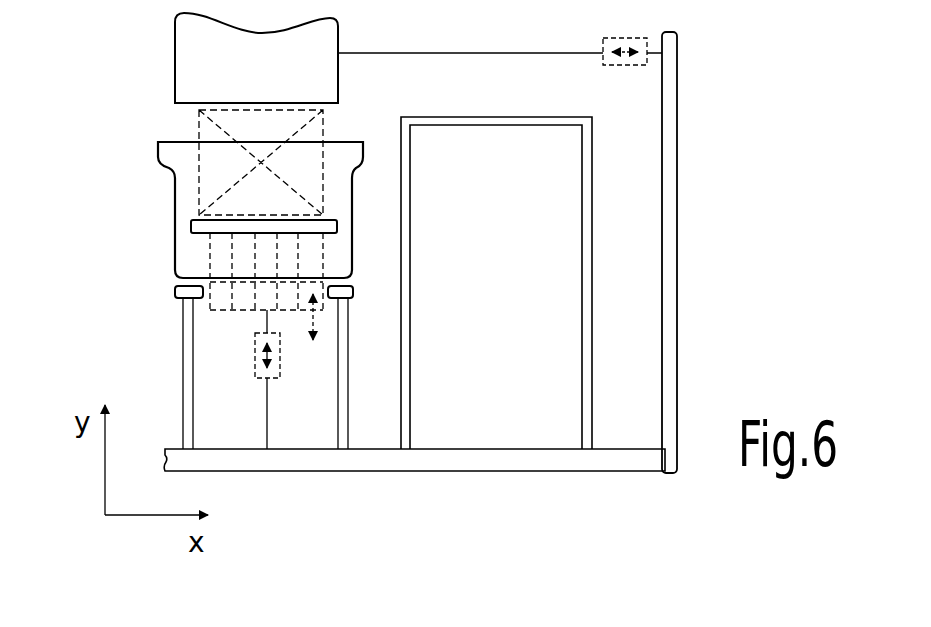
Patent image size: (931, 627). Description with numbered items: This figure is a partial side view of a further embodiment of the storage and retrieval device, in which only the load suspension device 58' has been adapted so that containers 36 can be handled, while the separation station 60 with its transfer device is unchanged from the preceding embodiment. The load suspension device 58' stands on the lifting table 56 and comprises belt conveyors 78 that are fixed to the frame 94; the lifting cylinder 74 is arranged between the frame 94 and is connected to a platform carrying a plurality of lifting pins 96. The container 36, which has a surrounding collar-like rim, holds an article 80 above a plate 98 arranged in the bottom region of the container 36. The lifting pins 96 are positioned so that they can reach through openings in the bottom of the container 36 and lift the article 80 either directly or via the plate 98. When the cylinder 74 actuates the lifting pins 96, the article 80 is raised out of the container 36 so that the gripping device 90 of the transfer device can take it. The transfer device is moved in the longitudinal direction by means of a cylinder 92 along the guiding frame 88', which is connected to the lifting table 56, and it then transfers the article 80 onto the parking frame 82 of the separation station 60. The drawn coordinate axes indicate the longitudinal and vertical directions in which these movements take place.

The gripping device 90 is at (175, 72).
The article 80 is at (323, 130).
The container 36 is at (172, 225).
The plate 98 is at (332, 236).
The lifting pins 96 is at (230, 292).
The lifting cylinder 74 is at (282, 350).
The belt conveyors 78 is at (172, 291).
The frame 94 is at (350, 372).
The lifting table 56 is at (263, 473).
The load suspension device 58' is at (350, 498).
The parking frame 82 is at (410, 330).
The separation station 60 is at (523, 400).
The cylinder 92 is at (620, 66).
The guiding frame 88' is at (749, 252).